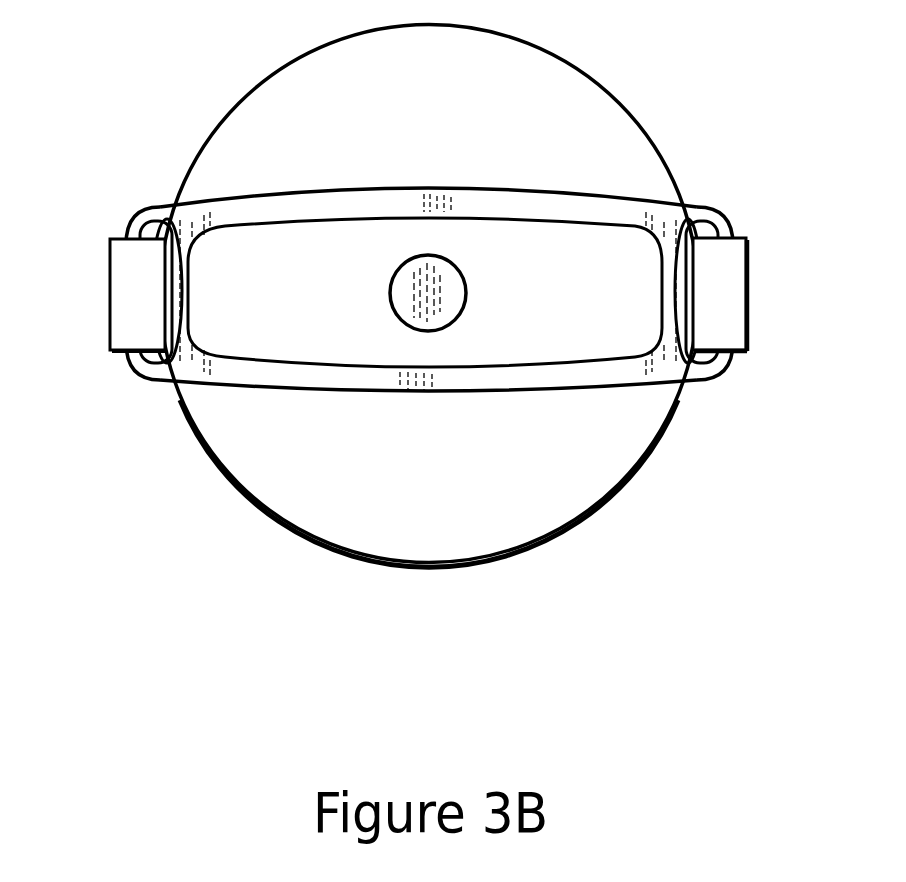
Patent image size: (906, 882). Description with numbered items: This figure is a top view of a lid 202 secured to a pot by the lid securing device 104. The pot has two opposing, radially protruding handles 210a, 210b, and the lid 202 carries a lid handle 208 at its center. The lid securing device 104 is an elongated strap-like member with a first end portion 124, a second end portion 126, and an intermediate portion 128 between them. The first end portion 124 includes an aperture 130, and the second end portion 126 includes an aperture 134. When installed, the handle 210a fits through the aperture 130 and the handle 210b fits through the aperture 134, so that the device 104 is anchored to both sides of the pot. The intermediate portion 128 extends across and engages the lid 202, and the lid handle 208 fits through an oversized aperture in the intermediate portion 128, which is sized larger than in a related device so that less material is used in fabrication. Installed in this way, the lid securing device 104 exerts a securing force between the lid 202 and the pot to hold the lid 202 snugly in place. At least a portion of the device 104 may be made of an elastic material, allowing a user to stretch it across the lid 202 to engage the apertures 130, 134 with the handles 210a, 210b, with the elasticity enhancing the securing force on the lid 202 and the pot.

The lid securing device 104 is at (613, 395).
The first end portion 124 is at (303, 392).
The second end portion 126 is at (543, 390).
The intermediate portion 128 is at (333, 207).
The aperture 130 is at (140, 232).
The aperture 134 is at (710, 233).
The lid 202 is at (625, 105).
The lid handle 208 is at (440, 265).
The handle 210a is at (108, 327).
The handle 210b is at (747, 320).